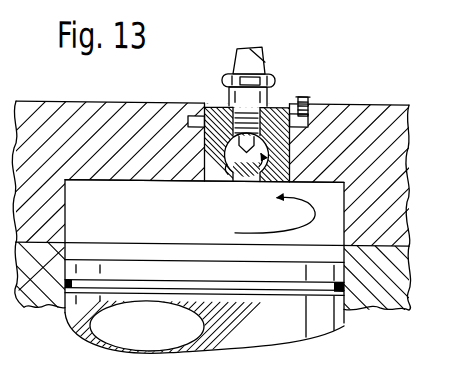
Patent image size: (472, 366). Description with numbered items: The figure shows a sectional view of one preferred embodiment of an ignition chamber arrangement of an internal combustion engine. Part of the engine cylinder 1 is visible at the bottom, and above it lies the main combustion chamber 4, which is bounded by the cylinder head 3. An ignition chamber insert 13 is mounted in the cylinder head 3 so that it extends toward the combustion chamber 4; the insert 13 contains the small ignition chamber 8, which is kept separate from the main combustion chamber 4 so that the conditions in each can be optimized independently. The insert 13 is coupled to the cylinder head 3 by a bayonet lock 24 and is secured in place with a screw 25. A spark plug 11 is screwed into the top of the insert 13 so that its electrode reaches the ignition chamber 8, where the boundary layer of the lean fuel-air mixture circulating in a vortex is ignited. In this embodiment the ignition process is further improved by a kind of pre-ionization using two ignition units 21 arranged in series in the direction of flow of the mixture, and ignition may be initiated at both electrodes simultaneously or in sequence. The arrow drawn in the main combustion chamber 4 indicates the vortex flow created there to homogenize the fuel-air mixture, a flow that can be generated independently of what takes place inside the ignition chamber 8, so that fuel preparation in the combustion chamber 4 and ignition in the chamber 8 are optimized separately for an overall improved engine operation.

The engine cylinder 1 is at (396, 274).
The cylinder head 3 is at (75, 114).
The main combustion chamber 4 is at (328, 215).
The ignition chamber 8 is at (218, 180).
The spark plug 11 is at (263, 62).
The ignition chamber insert 13 is at (213, 116).
The ignition units 21 is at (238, 161).
The bayonet lock 24 is at (200, 113).
The screw 25 is at (306, 96).